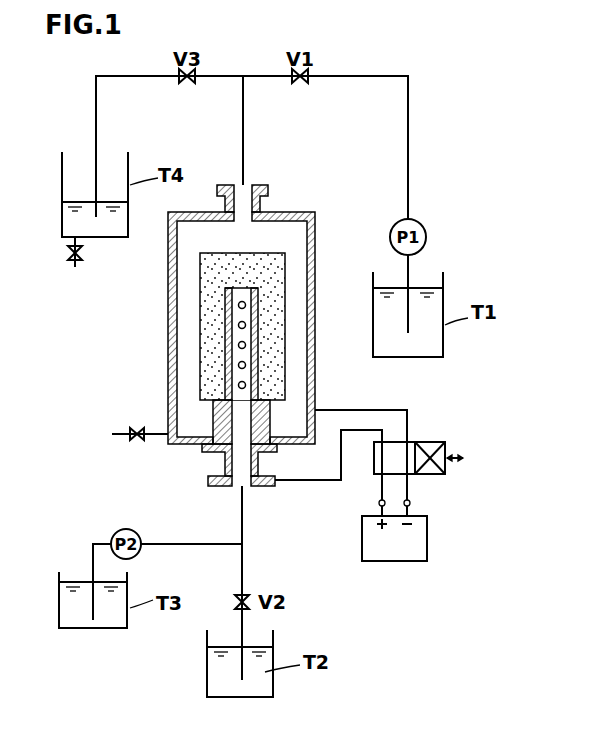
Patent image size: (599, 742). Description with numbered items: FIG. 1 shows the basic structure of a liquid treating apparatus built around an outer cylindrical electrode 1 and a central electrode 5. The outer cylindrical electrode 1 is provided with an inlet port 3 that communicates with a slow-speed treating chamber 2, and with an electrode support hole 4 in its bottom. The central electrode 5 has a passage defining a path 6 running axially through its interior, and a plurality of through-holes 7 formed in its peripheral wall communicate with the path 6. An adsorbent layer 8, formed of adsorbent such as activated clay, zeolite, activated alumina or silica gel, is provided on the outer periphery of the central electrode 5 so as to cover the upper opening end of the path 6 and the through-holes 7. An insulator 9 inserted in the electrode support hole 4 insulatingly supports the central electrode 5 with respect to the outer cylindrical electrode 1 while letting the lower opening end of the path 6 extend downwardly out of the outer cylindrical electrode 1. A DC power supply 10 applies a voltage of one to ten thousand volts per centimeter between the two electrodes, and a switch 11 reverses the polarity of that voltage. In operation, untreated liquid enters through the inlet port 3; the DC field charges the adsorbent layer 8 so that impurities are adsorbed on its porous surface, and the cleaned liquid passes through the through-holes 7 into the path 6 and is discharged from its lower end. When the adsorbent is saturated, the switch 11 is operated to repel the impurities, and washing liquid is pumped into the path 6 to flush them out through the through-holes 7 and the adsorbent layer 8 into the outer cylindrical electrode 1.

The outer cylindrical electrode 1 is at (313, 262).
The slow-speed treating chamber 2 is at (188, 248).
The inlet port 3 is at (254, 184).
The electrode support hole 4 is at (213, 448).
The central electrode 5 is at (262, 470).
The path 6 is at (238, 482).
The through-holes 7 is at (238, 306).
The adsorbent layer 8 is at (278, 323).
The insulator 9 is at (213, 418).
The DC power supply 10 is at (418, 538).
The switch 11 is at (432, 443).